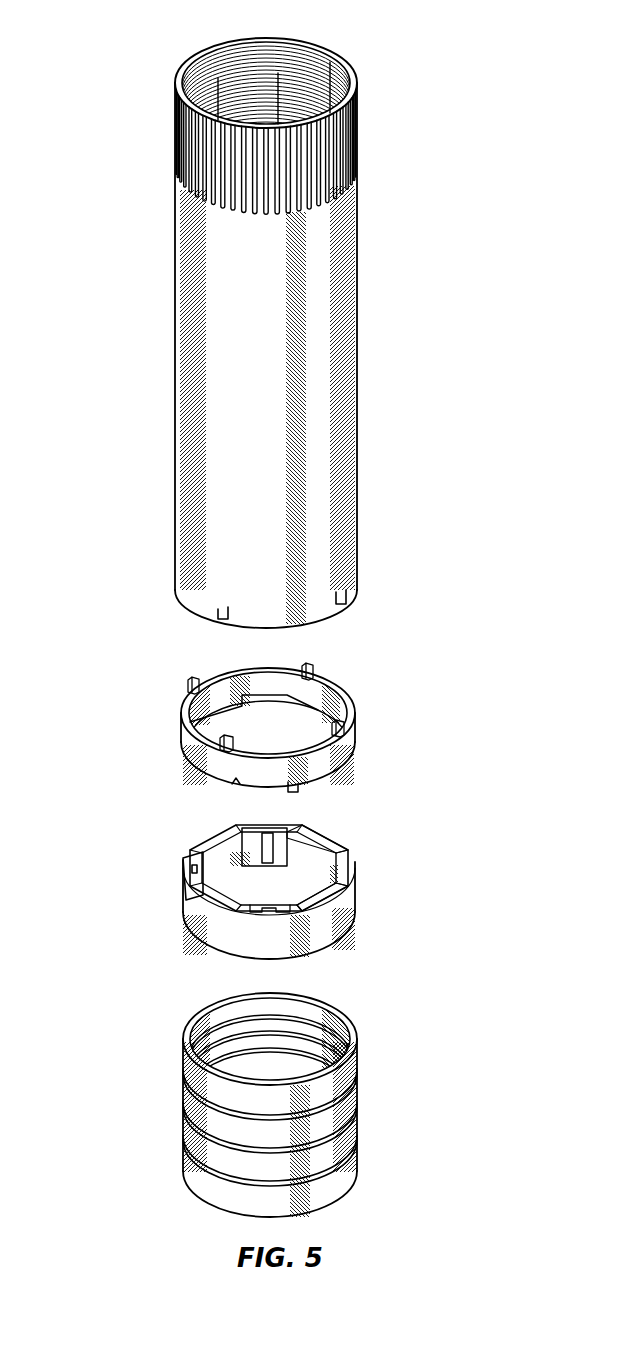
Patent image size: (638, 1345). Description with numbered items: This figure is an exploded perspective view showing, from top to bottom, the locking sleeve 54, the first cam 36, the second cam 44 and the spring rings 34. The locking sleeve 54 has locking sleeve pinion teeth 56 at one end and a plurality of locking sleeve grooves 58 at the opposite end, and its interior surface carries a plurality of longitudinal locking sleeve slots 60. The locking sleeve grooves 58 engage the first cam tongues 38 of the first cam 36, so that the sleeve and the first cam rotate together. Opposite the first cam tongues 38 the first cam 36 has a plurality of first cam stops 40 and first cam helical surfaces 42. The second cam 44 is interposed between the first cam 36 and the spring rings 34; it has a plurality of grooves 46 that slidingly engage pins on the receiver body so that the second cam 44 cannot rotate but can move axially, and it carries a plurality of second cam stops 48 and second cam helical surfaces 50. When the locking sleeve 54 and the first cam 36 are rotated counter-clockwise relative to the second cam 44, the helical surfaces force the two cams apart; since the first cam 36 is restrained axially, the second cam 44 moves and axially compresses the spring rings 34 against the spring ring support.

The spring rings 34 is at (367, 1062).
The first cam 36 is at (358, 730).
The first cam tongues 38 is at (193, 678).
The first cam stops 40 is at (243, 700).
The first cam helical surfaces 42 is at (236, 783).
The second cam 44 is at (360, 900).
The grooves 46 is at (273, 829).
The second cam stops 48 is at (183, 890).
The second cam helical surfaces 50 is at (308, 840).
The locking sleeve 54 is at (178, 305).
The locking sleeve pinion teeth 56 is at (178, 67).
The locking sleeve grooves 58 is at (226, 616).
The locking sleeve slots 60 is at (252, 53).